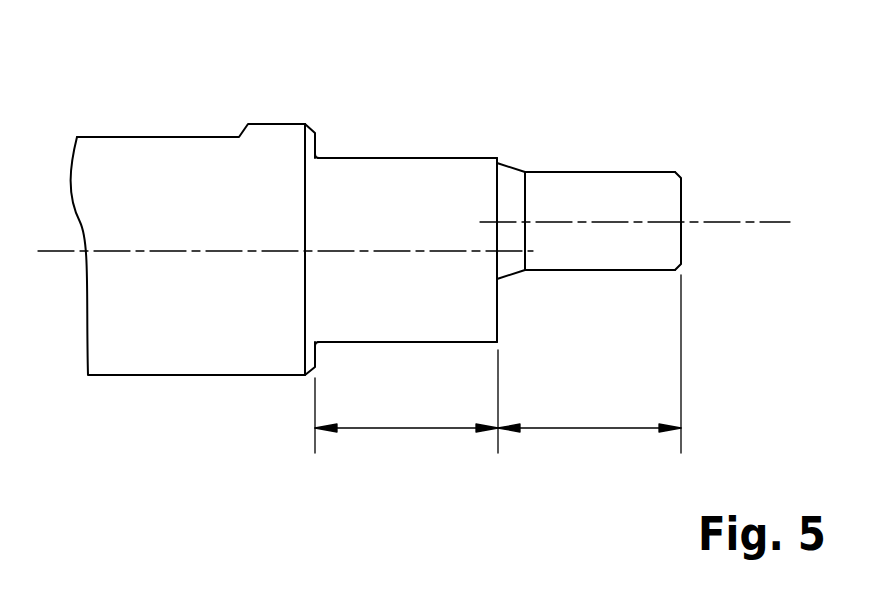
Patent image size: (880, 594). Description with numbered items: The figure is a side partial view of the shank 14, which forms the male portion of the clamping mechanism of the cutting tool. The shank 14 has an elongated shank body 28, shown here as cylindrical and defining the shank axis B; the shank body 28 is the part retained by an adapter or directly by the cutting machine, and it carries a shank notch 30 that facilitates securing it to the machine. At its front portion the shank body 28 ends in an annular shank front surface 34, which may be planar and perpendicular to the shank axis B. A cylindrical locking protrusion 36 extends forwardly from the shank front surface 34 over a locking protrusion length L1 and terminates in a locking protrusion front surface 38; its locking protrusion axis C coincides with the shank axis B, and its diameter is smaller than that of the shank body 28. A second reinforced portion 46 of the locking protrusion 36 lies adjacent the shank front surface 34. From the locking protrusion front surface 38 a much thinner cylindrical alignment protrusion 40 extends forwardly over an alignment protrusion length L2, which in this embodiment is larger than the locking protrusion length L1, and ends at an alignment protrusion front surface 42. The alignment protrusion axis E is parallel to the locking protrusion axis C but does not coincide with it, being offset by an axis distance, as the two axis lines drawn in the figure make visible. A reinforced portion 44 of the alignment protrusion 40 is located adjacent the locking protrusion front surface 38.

The shank 14 is at (630, 167).
The shank body 28 is at (205, 360).
The shank notch 30 is at (148, 135).
The shank front surface 34 is at (316, 142).
The locking protrusion 36 is at (380, 183).
The locking protrusion front surface 38 is at (500, 322).
The alignment protrusion 40 is at (578, 185).
The alignment protrusion front surface 42 is at (662, 138).
The reinforced portion 44 is at (512, 183).
The second reinforced portion 46 is at (317, 343).
The shank axis B is at (63, 252).
The locking protrusion axis C is at (508, 252).
The alignment protrusion axis E is at (733, 221).
The locking protrusion length L1 is at (406, 401).
The alignment protrusion length L2 is at (589, 364).